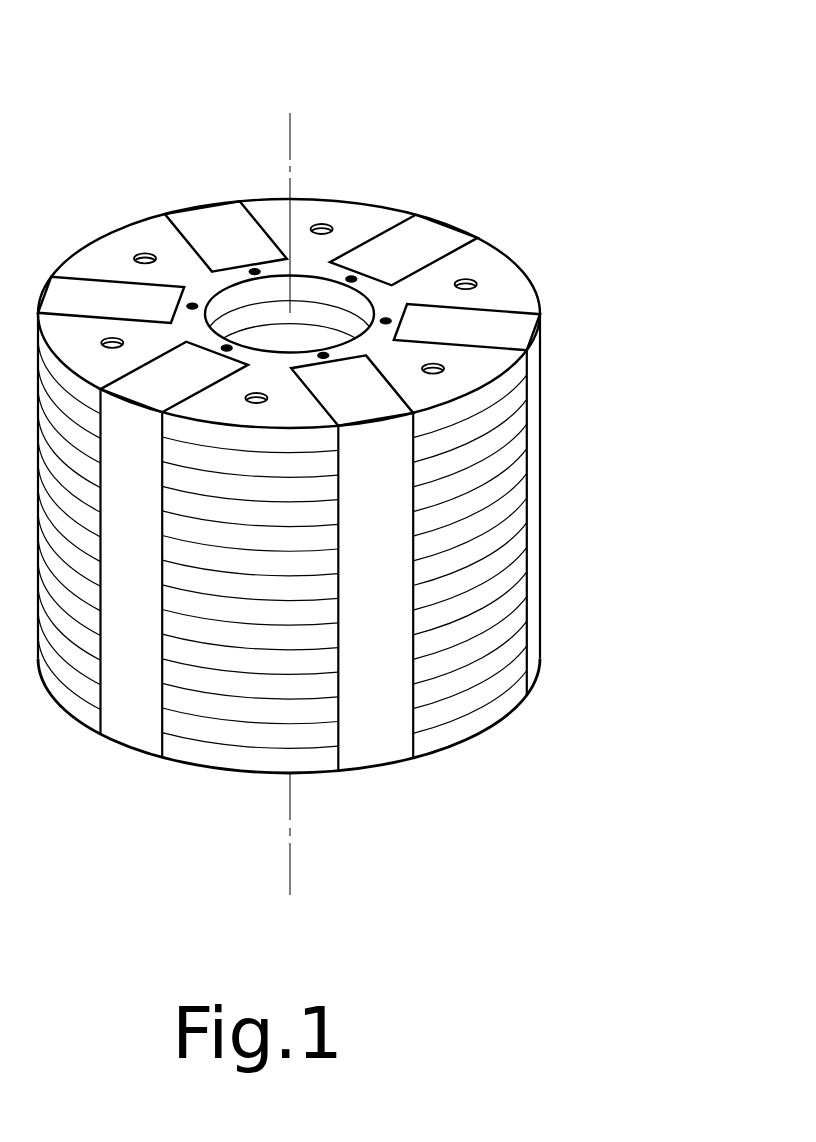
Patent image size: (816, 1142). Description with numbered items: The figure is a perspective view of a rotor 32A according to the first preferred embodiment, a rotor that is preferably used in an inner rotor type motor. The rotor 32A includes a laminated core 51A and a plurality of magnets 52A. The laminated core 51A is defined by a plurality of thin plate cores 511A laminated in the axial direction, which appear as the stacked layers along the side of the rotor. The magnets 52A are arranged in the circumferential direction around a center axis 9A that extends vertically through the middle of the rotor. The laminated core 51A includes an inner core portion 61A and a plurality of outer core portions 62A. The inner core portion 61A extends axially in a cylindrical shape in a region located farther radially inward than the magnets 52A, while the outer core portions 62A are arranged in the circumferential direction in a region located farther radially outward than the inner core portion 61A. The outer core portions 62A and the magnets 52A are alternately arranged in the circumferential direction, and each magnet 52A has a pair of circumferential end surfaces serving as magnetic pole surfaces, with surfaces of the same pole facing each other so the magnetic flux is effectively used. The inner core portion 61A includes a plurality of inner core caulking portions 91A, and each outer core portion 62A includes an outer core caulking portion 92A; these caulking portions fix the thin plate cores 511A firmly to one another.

The rotor 32A is at (410, 90).
The center axis 9A is at (291, 142).
The laminated core 51A is at (216, 137).
The inner core portion 61A is at (237, 273).
The outer core portions 62A is at (173, 260).
The magnets 52A is at (418, 250).
The inner core caulking portions 91A is at (353, 277).
The outer core caulking portions 92A is at (470, 280).
The thin plate cores 511A is at (500, 512).